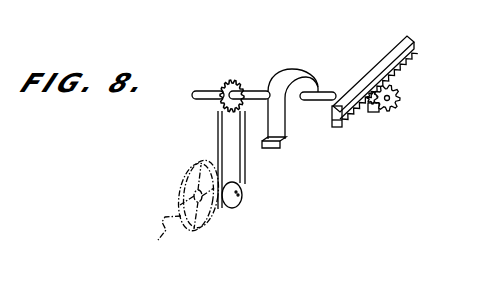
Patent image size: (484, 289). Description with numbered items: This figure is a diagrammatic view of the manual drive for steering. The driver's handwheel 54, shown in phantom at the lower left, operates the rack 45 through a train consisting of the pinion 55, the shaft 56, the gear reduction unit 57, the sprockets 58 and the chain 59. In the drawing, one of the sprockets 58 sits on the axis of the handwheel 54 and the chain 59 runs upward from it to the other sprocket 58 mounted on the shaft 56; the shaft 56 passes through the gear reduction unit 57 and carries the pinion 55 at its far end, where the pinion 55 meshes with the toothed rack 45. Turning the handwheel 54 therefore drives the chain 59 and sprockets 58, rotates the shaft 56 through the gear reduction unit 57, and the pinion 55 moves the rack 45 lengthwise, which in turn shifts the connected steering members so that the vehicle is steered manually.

The rack 45 is at (414, 44).
The handwheel 54 is at (202, 226).
The pinion 55 is at (389, 112).
The shaft 56 is at (257, 90).
The gear reduction unit 57 is at (290, 73).
The sprockets 58 is at (228, 79).
The chain 59 is at (248, 162).